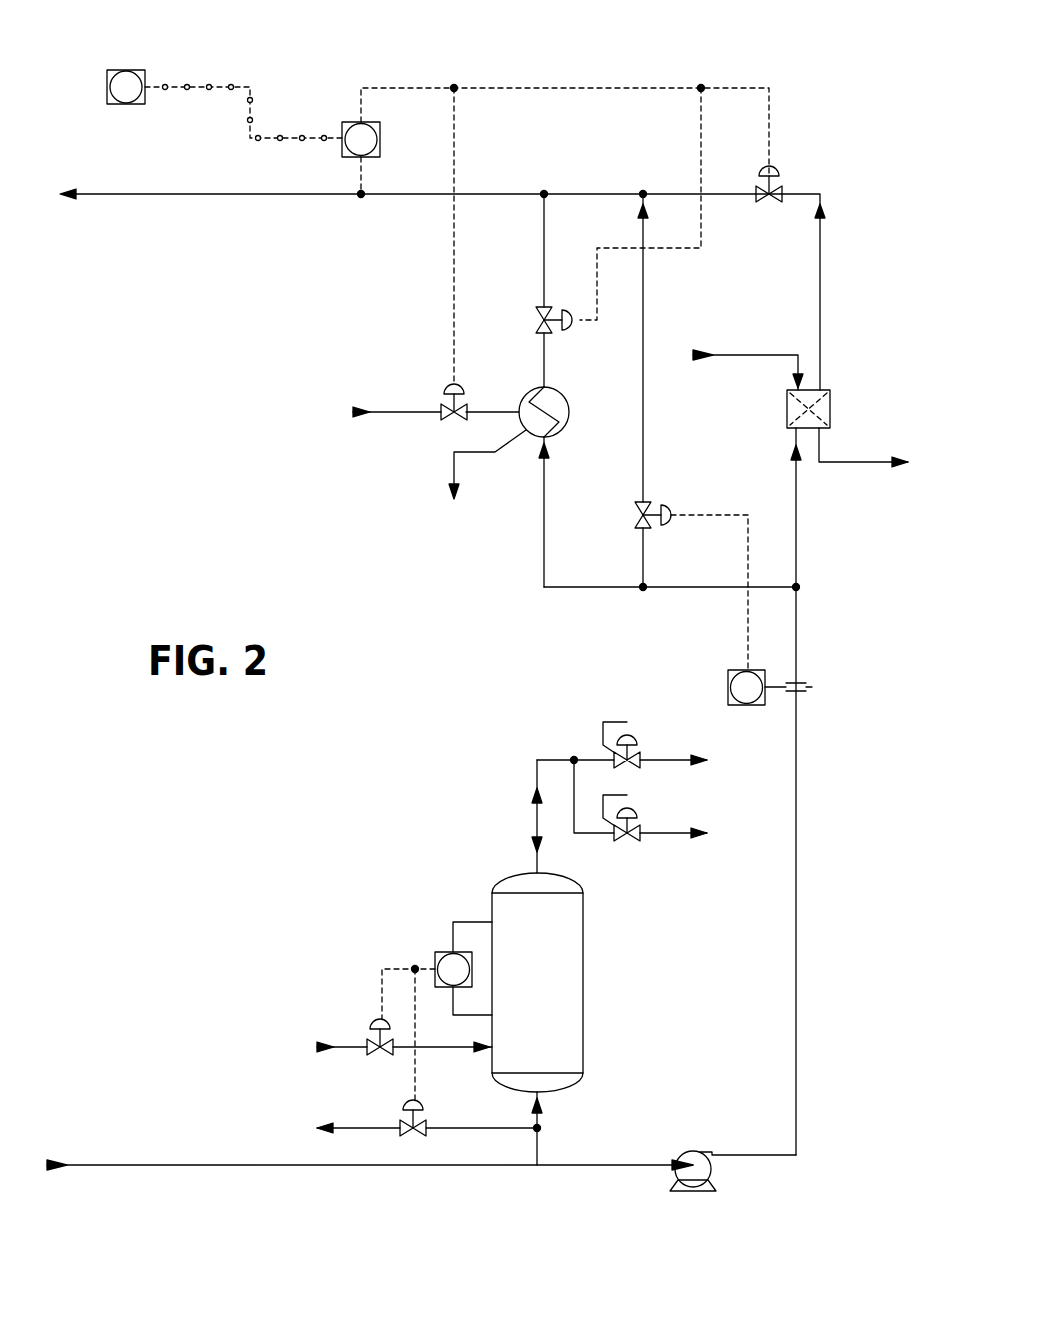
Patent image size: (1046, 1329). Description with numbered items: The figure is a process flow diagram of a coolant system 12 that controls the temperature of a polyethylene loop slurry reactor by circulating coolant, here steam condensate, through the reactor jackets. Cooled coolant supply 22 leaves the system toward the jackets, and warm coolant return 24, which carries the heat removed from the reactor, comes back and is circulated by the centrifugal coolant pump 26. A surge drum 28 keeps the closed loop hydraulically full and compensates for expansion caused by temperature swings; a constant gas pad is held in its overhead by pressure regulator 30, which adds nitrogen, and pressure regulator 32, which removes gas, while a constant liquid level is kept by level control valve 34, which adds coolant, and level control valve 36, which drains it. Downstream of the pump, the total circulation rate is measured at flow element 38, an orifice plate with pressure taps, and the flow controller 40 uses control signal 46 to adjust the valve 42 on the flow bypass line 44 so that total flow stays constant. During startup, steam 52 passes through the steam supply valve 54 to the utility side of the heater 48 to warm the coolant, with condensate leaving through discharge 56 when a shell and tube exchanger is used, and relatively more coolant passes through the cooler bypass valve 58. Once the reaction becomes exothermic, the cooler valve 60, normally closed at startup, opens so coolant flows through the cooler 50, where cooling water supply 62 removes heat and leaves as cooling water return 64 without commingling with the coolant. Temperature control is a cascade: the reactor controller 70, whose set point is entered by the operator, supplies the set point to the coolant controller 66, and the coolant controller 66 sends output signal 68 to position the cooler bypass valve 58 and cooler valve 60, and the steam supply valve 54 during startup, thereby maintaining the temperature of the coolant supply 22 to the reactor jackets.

The coolant system 12 is at (620, 66).
The coolant supply 22 is at (305, 196).
The coolant return 24 is at (350, 1166).
The coolant pump 26 is at (711, 1172).
The surge drum 28 is at (583, 968).
The pressure regulator 30 is at (640, 757).
The pressure regulator 32 is at (640, 836).
The level control valve 34 is at (368, 1046).
The level control valve 36 is at (426, 1126).
The flow element 38 is at (812, 687).
The flow controller 40 is at (728, 687).
The valve 42 is at (637, 522).
The flow bypass line 44 is at (640, 337).
The control signal 46 is at (748, 535).
The heater 48 is at (568, 415).
The cooler 50 is at (786, 405).
The steam 52 is at (392, 410).
The steam supply valve 54 is at (447, 420).
The discharge 56 is at (466, 454).
The cooler bypass valve 58 is at (537, 316).
The cooler valve 60 is at (783, 192).
The cooling water supply 62 is at (762, 353).
The cooling water return 64 is at (845, 462).
The coolant controller 66 is at (382, 142).
The output signal 68 is at (403, 88).
The reactor controller 70 is at (128, 70).